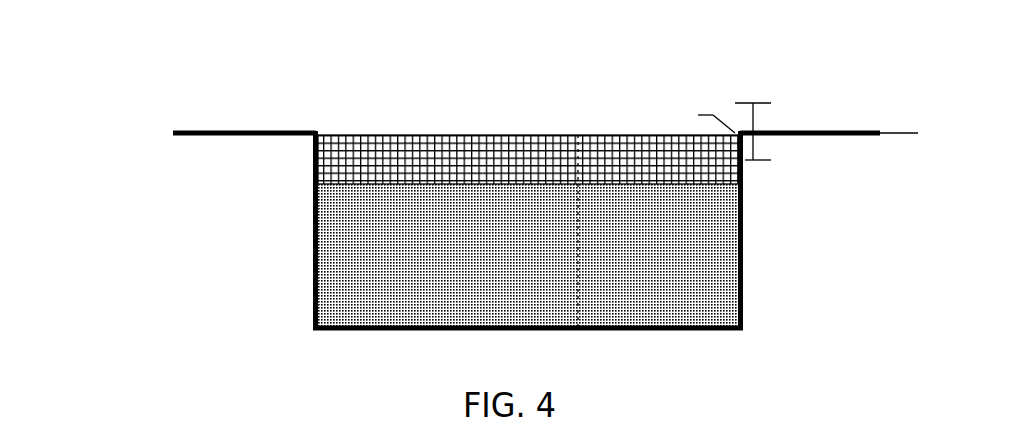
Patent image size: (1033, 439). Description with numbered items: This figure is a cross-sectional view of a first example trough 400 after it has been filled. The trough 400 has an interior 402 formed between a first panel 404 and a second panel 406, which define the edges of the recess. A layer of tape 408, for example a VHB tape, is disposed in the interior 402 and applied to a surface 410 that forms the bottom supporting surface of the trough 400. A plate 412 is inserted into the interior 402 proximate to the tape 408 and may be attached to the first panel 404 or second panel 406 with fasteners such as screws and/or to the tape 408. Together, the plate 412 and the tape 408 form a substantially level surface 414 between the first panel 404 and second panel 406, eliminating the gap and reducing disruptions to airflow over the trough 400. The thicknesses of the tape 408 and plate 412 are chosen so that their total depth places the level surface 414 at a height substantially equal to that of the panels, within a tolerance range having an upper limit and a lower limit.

The trough 400 is at (132, 60).
The interior 402 is at (528, 138).
The first panel 404 is at (227, 119).
The second panel 406 is at (822, 118).
The layer of tape 408 is at (306, 231).
The surface 410 is at (528, 344).
The plate 412 is at (295, 230).
The level surface 414 is at (661, 217).